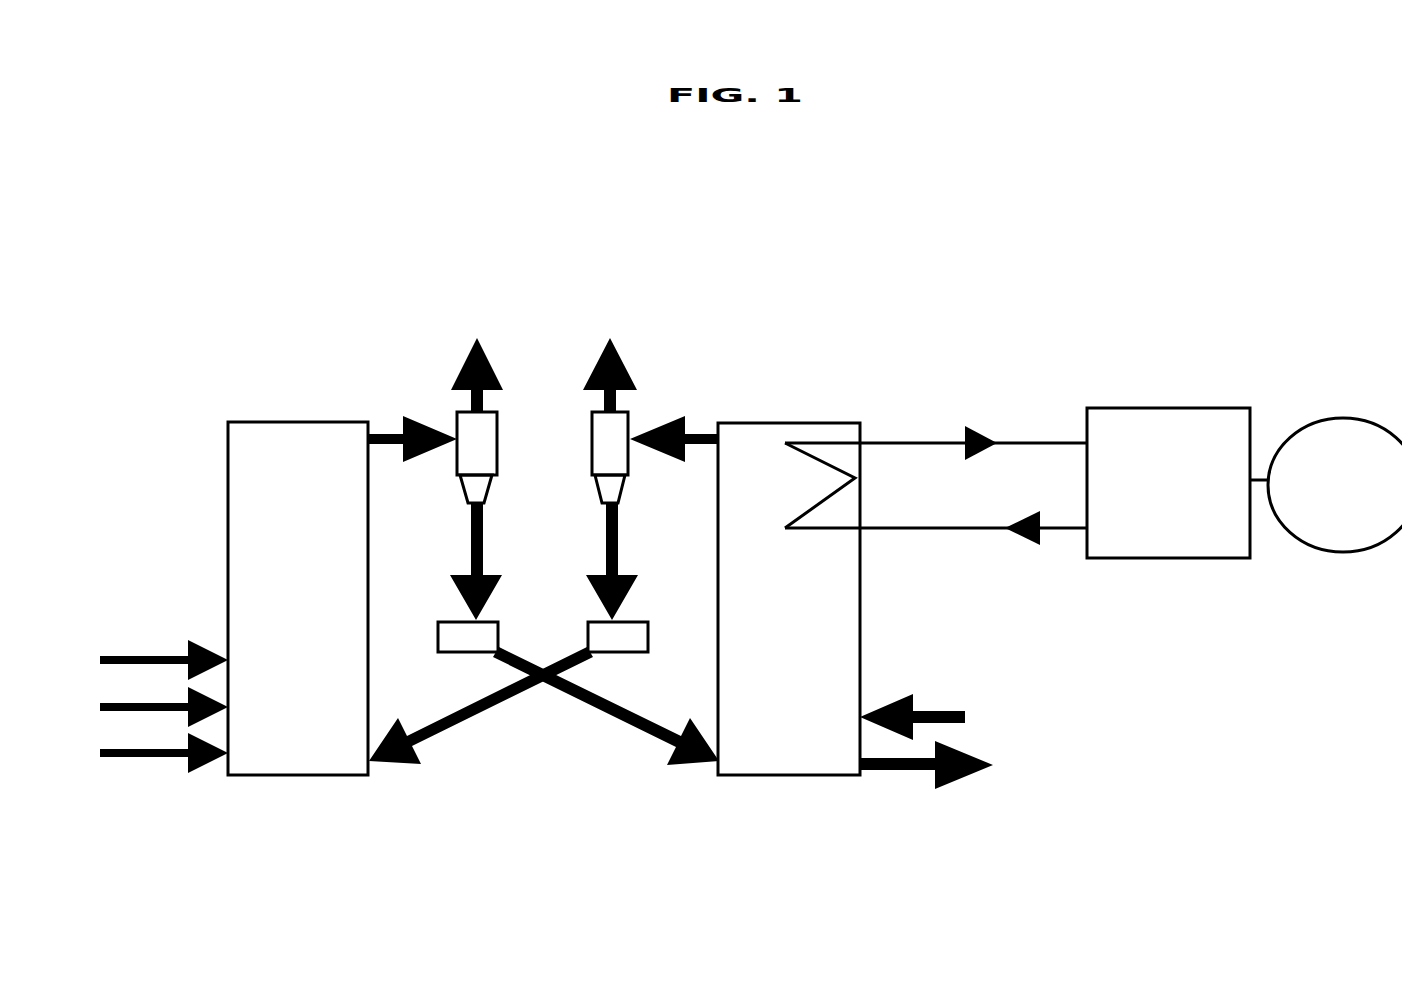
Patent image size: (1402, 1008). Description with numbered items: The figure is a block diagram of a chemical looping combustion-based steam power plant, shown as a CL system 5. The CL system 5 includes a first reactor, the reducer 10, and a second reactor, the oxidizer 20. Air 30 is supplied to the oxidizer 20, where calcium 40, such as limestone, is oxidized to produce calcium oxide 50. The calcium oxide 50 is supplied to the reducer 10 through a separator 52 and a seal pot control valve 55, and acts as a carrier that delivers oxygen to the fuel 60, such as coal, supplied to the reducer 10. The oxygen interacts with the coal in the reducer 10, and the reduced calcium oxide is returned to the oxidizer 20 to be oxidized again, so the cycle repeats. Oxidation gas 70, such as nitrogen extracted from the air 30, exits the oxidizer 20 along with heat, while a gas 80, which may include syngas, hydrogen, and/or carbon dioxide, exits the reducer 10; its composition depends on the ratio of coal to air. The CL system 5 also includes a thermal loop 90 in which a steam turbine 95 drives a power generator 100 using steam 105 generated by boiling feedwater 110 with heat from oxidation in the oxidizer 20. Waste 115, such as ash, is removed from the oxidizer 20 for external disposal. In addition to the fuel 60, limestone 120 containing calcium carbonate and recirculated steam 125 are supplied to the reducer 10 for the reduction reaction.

The CL system 5 is at (155, 324).
The first reactor (reducer) 10 is at (285, 586).
The second reactor (oxidizer) 20 is at (778, 600).
The air 30 is at (938, 708).
The calcium 40 is at (388, 443).
The calcium oxide (CaO) 50 is at (683, 650).
The separator 52 is at (465, 454).
The seal pot control valve (SPCV) 55 is at (456, 649).
The fuel (coal) 60 is at (150, 656).
The oxidation gas (nitrogen gas) 70 is at (690, 527).
The gas (syngas, hydrogen, carbon dioxide) 80 is at (380, 434).
The thermal loop 90 is at (1077, 417).
The steam turbine 95 is at (1158, 494).
The power generator 100 is at (1325, 496).
The steam 105 is at (958, 442).
The feedwater 110 is at (977, 530).
The waste (ash) 115 is at (960, 778).
The limestone 120 is at (133, 705).
The recirculated steam 125 is at (156, 755).